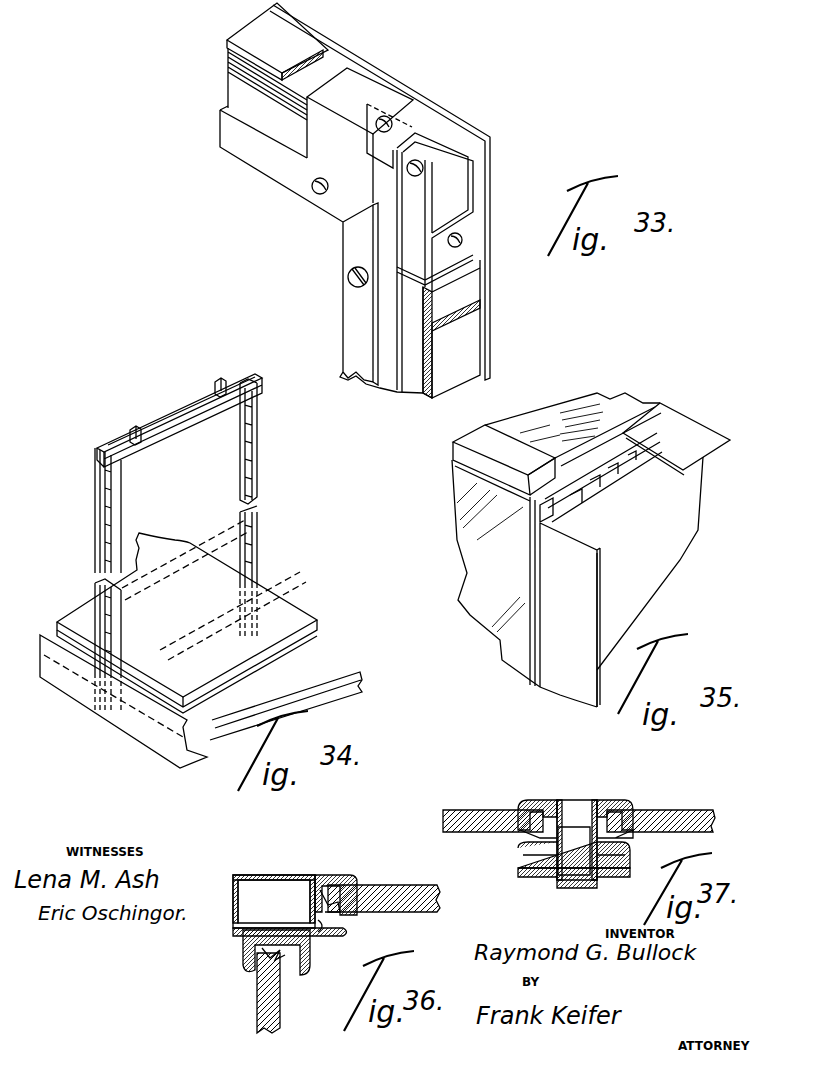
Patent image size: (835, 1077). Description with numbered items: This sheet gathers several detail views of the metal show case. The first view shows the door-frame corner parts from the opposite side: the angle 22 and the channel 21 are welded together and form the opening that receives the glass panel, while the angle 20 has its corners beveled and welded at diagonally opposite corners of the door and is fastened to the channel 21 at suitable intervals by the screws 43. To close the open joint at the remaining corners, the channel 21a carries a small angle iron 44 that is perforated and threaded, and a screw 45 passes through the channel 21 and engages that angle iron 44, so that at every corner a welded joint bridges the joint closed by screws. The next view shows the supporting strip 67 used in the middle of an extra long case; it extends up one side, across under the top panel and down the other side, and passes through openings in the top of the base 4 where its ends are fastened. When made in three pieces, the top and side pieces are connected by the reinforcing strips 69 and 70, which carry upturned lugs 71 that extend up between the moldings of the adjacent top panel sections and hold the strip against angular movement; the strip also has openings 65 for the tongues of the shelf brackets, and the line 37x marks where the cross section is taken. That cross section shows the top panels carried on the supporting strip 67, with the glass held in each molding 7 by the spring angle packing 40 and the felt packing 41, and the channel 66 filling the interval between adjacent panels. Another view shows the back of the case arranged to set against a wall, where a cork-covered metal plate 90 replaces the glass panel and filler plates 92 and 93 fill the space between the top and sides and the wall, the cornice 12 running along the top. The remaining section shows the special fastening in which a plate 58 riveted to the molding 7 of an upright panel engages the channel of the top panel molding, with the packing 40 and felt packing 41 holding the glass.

In FIG. 33, the angle 20 is at (330, 67).
In FIG. 33, the channel 21 is at (356, 318).
In FIG. 33, the channel 21a is at (380, 92).
In FIG. 33, the angle 22 is at (478, 135).
In FIG. 33, the screws 43 is at (348, 278).
In FIG. 33, the small angle iron 44 is at (328, 196).
In FIG. 33, the screw 45 is at (392, 170).
In FIG. 34, the base 4 is at (305, 653).
In FIG. 34, the section line 37x is at (168, 416).
In FIG. 34, the openings 65 is at (258, 492).
In FIG. 34, the supporting strip 67 is at (257, 453).
In FIG. 37, the supporting strip 67 is at (563, 890).
In FIG. 34, the reinforcing strip 69 is at (243, 372).
In FIG. 34, the reinforcing strip 70 is at (108, 466).
In FIG. 34, the upturned lugs 71 is at (219, 380).
In FIG. 37, the upturned lugs 71 is at (573, 847).
In FIG. 35, the cornice 12 is at (463, 441).
In FIG. 36, the cornice 12 is at (252, 875).
In FIG. 35, the metal plate 90 is at (693, 513).
In FIG. 35, the filler plate 92 is at (693, 420).
In FIG. 35, the filler plate 93 is at (597, 600).
In FIG. 36, the molding 7 is at (342, 882).
In FIG. 37, the molding 7 is at (534, 806).
In FIG. 36, the spring angle packing 40 is at (328, 911).
In FIG. 37, the spring angle packing 40 is at (522, 839).
In FIG. 36, the felt packing 41 is at (325, 882).
In FIG. 37, the felt packing 41 is at (522, 806).
In FIG. 36, the plate 58 is at (242, 935).
In FIG. 37, the channel 66 is at (570, 800).